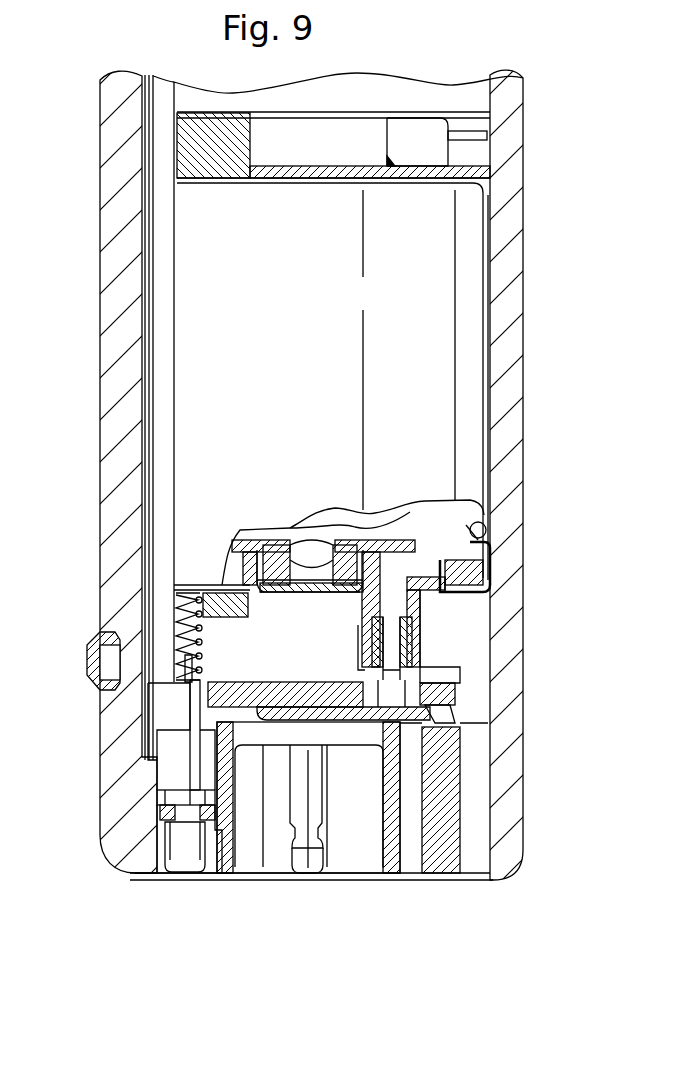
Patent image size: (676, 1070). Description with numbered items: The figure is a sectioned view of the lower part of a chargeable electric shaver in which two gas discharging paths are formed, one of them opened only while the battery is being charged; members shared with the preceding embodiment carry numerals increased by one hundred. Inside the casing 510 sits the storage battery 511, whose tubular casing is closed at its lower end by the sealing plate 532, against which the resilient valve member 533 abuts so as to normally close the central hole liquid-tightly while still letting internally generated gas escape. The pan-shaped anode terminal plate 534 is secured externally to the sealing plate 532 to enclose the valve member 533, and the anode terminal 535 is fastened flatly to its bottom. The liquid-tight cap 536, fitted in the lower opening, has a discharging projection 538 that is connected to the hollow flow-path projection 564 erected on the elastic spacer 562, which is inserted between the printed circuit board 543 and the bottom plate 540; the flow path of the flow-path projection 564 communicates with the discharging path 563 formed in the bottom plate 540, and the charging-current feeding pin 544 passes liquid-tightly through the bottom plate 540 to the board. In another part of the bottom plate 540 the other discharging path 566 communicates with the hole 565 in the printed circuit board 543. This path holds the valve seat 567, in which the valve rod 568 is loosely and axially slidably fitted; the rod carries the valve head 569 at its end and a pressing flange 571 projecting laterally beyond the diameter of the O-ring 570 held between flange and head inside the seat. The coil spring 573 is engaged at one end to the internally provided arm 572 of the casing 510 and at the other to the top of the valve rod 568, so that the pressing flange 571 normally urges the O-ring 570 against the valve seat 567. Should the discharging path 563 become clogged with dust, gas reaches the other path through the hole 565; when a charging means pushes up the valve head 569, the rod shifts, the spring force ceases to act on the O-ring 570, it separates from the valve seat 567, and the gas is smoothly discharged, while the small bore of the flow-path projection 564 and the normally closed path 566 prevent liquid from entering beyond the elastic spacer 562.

The casing 510 is at (518, 325).
The storage battery 511 is at (467, 402).
The resilient valve member 533 is at (440, 493).
The sealing plate 532 is at (490, 543).
The anode terminal plate 534 is at (233, 564).
The anode terminal 535 is at (205, 608).
The arm 572 is at (182, 638).
The coil spring 573 is at (132, 663).
The printed circuit board 543 is at (207, 692).
The hole 565 is at (203, 697).
The valve rod 568 is at (177, 757).
The pressing flange 571 is at (157, 795).
The O-ring 570 is at (158, 817).
The valve seat 567 is at (157, 830).
The valve head 569 is at (193, 857).
The discharging path 566 is at (132, 873).
The bottom plate 540 is at (277, 733).
The charging-current feeding pin 544 is at (317, 807).
The liquid-tight cap 536 is at (445, 590).
The discharging projection 538 is at (420, 627).
The flow-path projection 564 is at (420, 675).
The elastic spacer 562 is at (452, 718).
The discharging path 563 is at (440, 795).